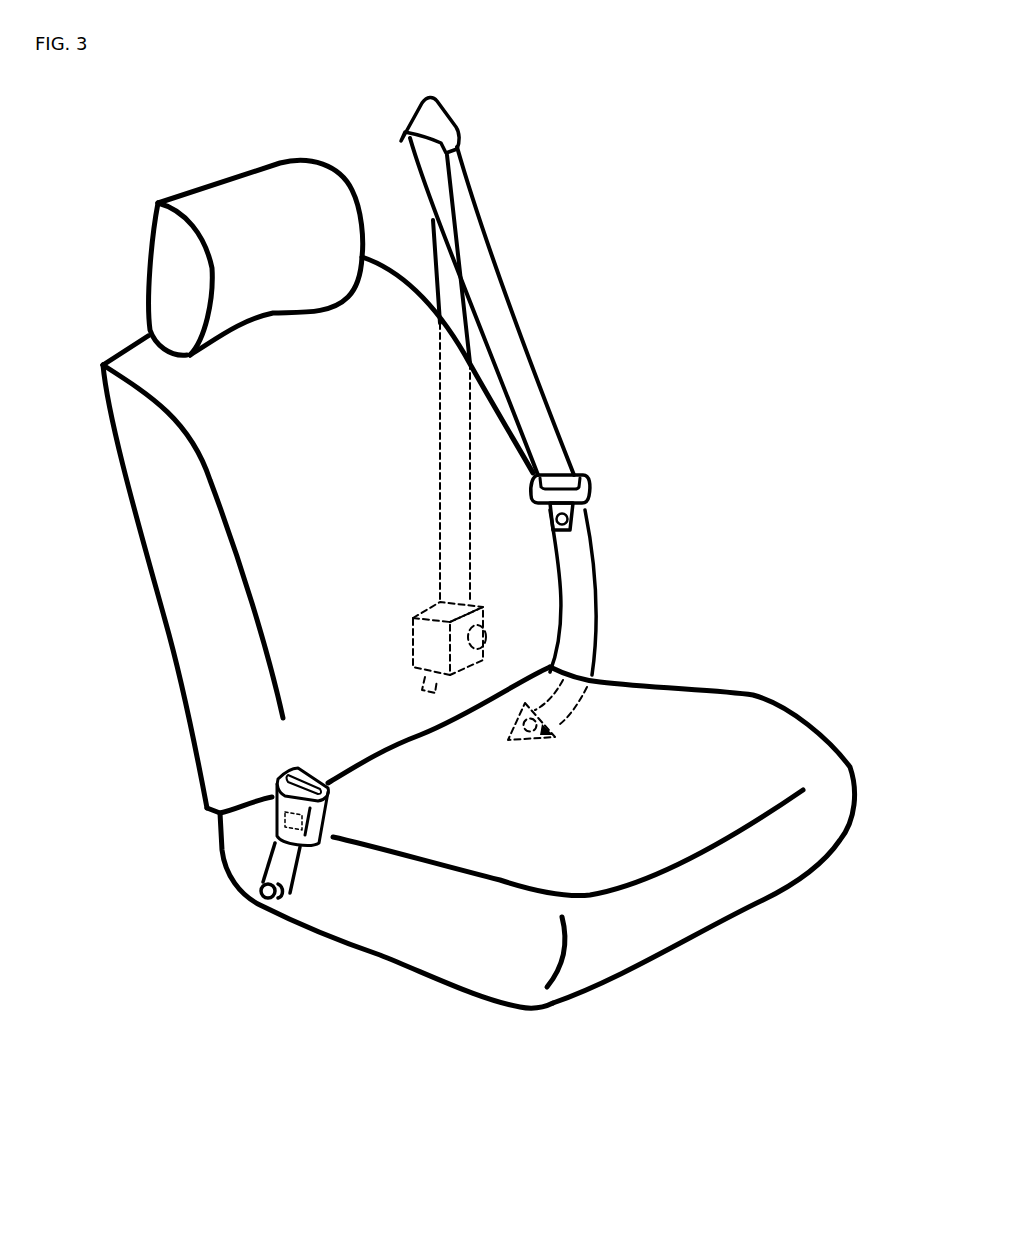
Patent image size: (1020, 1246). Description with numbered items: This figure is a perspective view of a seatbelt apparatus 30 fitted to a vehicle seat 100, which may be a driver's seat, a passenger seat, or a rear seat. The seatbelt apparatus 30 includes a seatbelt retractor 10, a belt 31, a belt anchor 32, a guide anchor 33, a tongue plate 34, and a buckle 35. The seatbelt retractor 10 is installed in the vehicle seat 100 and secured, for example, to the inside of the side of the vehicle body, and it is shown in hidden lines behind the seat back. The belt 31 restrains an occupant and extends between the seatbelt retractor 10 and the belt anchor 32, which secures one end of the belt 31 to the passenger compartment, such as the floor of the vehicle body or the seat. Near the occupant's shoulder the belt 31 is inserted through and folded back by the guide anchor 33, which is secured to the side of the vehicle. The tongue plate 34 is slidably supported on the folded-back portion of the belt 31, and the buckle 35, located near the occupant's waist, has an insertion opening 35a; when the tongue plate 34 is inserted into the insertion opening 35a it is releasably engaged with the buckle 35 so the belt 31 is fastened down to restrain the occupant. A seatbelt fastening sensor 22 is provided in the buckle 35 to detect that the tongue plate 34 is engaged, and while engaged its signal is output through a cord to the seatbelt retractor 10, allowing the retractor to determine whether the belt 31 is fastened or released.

The vehicle seat 100 is at (130, 358).
The seatbelt apparatus 30 is at (403, 489).
The belt 31 is at (482, 275).
The guide anchor 33 is at (433, 128).
The tongue plate 34 is at (590, 478).
The belt anchor 32 is at (547, 743).
The buckle 35 is at (253, 779).
The insertion opening 35a is at (313, 775).
The seatbelt fastening sensor 22 is at (277, 828).
The seatbelt retractor 10 is at (427, 640).